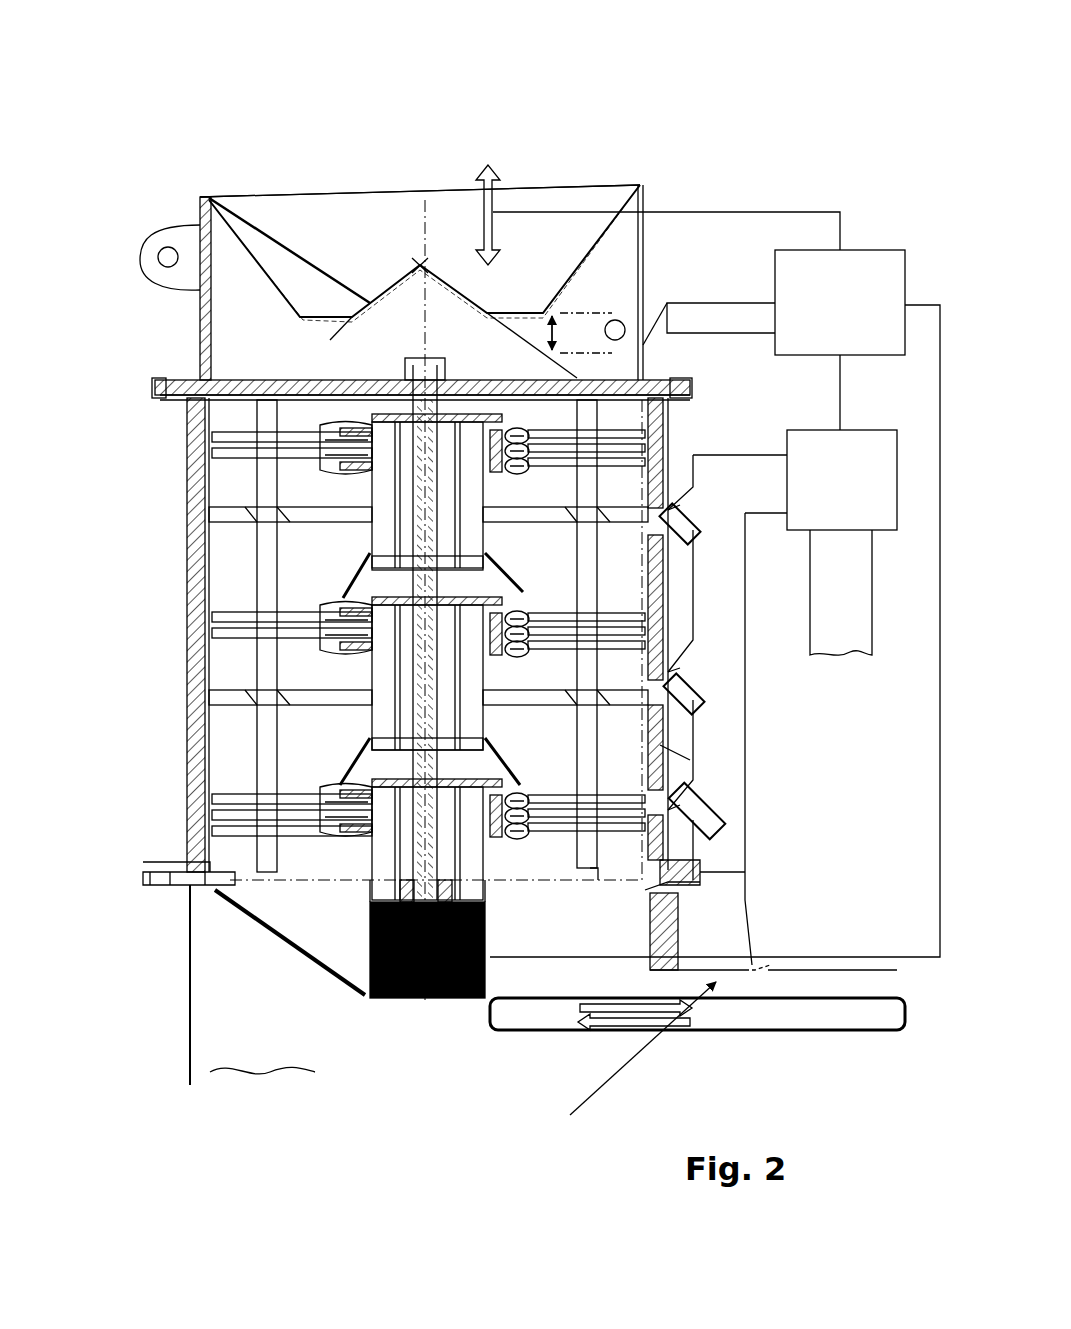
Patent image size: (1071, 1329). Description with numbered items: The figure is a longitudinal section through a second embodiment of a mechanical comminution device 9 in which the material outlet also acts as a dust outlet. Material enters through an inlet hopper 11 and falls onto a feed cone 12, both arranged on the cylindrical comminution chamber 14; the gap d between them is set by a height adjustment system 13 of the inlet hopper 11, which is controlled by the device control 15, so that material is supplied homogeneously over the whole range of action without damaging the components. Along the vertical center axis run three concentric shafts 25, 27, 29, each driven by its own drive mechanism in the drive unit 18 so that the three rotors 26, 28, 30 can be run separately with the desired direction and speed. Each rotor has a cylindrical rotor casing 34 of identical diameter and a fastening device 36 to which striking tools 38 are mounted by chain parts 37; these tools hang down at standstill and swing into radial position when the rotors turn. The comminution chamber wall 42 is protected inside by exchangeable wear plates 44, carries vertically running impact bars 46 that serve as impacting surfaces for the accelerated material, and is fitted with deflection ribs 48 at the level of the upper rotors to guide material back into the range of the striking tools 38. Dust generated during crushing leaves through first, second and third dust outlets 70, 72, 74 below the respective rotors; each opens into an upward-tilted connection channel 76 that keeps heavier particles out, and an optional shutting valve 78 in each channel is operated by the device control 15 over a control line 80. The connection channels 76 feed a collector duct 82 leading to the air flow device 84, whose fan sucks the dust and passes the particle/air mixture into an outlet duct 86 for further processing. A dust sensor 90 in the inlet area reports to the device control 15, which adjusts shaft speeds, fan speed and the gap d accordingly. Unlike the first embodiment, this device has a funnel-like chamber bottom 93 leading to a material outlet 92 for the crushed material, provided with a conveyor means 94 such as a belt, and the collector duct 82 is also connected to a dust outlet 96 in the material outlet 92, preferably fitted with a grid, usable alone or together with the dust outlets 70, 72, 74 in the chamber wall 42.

The comminution device 9 is at (222, 135).
The inlet hopper 11 is at (338, 252).
The feed cone 12 is at (232, 196).
The height adjustment system 13 is at (492, 190).
The comminution chamber 14 is at (182, 560).
The device control 15 is at (858, 265).
The drive unit 18 is at (430, 955).
The first concentric shaft 25 is at (433, 505).
The first rotor 26 is at (322, 448).
The second concentric shaft 27 is at (410, 700).
The second rotor 28 is at (322, 618).
The third concentric shaft 29 is at (322, 790).
The third rotor 30 is at (383, 720).
The rotor casing 34 is at (305, 520).
The fastening device 36 is at (410, 438).
The chain parts 37 is at (515, 410).
The striking tools 38 is at (330, 437).
The comminution chamber wall 42 is at (187, 785).
The wear plates 44 is at (240, 813).
The impact bars 46 is at (583, 595).
The deflection ribs 48 is at (610, 515).
The first dust outlets 70 is at (665, 580).
The second dust outlets 72 is at (668, 763).
The third dust outlets 74 is at (650, 857).
The connection channels 76 is at (670, 550).
The shutting valve 78 is at (690, 532).
The control line 80 is at (745, 300).
The collector duct 82 is at (735, 485).
The air flow device 84 is at (853, 470).
The outlet duct 86 is at (858, 585).
The dust sensor 90 is at (625, 322).
The material outlet 92 is at (625, 1071).
The chamber bottom 93 is at (317, 965).
The conveyor means 94 is at (548, 1020).
The dust outlet 96 is at (753, 972).